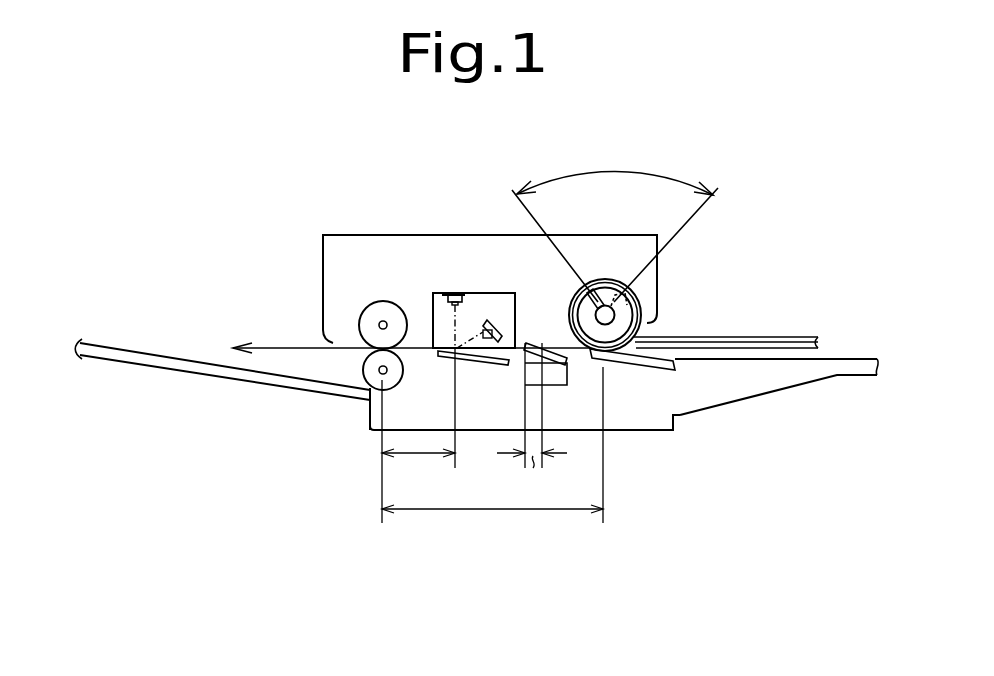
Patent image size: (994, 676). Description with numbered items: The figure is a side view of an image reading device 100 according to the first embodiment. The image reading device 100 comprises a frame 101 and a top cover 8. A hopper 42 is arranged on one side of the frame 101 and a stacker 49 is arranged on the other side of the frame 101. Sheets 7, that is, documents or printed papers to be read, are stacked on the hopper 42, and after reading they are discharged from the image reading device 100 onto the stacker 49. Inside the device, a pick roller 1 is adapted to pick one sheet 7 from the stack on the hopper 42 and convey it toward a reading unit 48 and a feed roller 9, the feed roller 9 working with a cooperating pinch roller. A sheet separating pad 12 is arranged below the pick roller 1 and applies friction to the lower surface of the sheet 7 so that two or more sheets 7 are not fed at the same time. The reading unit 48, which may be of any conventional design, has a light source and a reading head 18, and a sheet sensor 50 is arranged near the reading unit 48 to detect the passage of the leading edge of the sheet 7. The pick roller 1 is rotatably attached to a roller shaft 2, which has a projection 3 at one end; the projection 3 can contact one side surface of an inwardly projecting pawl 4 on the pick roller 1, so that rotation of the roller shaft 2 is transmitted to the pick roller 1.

The image reading device 100 is at (308, 203).
The pick roller 1 is at (643, 323).
The roller shaft 2 is at (612, 321).
The projection 3 is at (588, 288).
The pawl 4 is at (607, 293).
The sheets 7 is at (763, 340).
The top cover 8 is at (410, 234).
The feed roller 9 is at (366, 317).
The sheet separating pad 12 is at (635, 365).
The reading head 18 is at (457, 293).
The hopper 42 is at (783, 370).
The reading unit 48 is at (488, 300).
The stacker 49 is at (160, 360).
The sheet sensor 50 is at (565, 370).
The frame 101 is at (367, 423).